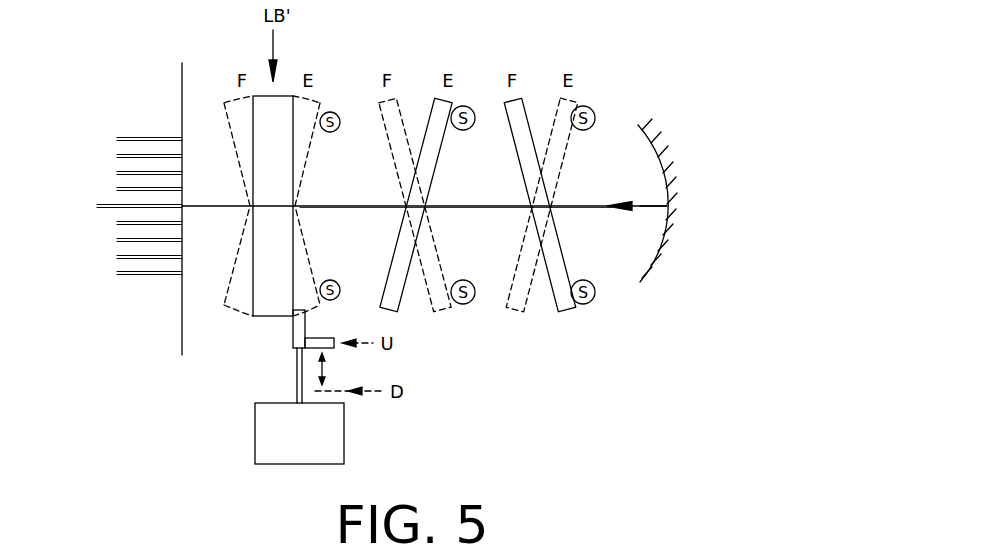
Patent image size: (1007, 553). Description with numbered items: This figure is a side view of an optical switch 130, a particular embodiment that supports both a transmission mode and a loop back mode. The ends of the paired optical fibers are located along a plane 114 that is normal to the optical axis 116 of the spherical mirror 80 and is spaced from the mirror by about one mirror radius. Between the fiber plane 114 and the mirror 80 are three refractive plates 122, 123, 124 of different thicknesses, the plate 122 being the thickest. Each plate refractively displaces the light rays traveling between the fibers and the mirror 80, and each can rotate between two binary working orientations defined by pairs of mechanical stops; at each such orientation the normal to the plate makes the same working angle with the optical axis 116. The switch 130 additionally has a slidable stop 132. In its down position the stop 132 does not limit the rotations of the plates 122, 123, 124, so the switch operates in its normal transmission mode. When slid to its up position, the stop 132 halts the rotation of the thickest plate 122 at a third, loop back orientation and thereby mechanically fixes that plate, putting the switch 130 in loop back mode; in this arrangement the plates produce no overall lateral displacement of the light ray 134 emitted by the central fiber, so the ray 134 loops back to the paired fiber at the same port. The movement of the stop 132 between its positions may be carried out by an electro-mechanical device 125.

The plane 114 is at (182, 95).
The plate 122 is at (267, 163).
The light ray 134 is at (216, 208).
The slidable stop 132 is at (298, 335).
The electro-mechanical device 125 is at (278, 446).
The plate 123 is at (428, 252).
The plate 124 is at (553, 155).
The optical axis 116 is at (660, 206).
The spherical mirror 80 is at (643, 274).
The optical switch 130 is at (518, 360).